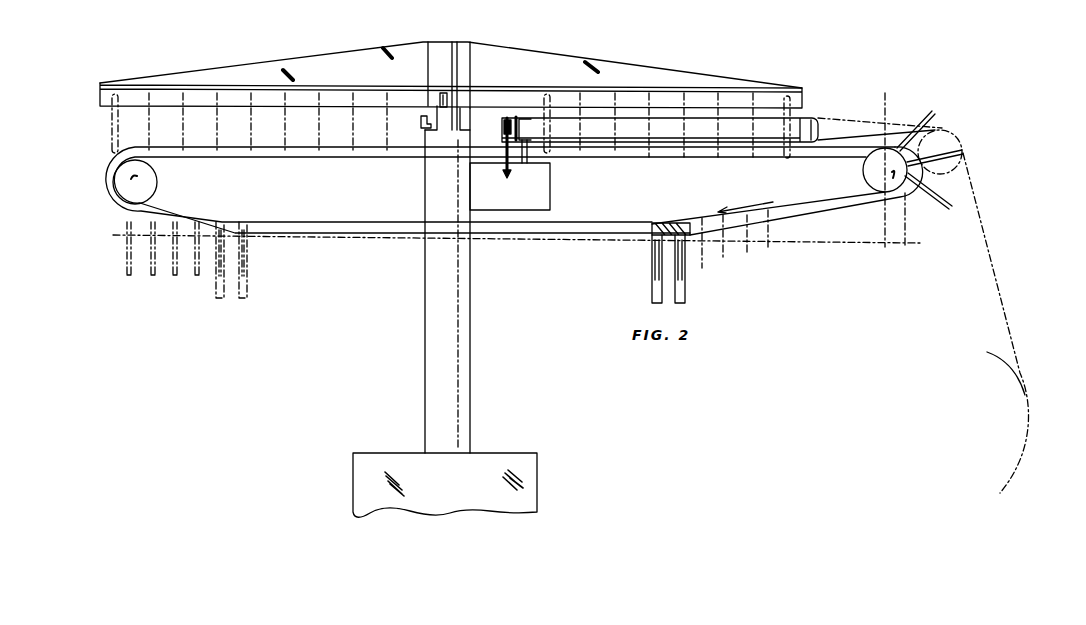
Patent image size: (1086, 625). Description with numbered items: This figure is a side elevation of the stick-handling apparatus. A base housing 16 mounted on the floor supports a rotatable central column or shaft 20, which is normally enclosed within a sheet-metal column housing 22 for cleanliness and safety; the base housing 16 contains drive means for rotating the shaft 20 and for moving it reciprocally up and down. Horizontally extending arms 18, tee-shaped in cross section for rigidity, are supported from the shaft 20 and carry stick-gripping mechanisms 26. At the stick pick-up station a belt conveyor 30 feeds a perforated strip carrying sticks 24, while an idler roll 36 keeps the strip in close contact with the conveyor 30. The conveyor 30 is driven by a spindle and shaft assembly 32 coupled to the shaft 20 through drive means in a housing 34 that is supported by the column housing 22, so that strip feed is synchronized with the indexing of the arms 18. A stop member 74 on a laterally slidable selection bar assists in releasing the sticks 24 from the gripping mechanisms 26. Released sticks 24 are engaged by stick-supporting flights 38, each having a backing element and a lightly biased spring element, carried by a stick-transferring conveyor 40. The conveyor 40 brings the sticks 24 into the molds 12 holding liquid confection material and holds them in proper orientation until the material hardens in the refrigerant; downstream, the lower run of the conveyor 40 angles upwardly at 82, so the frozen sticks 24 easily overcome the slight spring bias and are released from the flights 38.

The mold 12 is at (249, 290).
The base housing 16 is at (489, 455).
The horizontally extending arm 18 is at (451, 86).
The rotatable central column or shaft 20 is at (458, 122).
The column housing enclosure 22 is at (470, 267).
The stick 24 is at (793, 105).
The stick-gripping mechanism 26 is at (434, 100).
The belt conveyor 30 is at (608, 134).
The spindle and shaft assembly 32 is at (529, 140).
The drive housing 34 is at (551, 181).
The idler roll 36 is at (505, 126).
The stick-supporting flight 38 is at (660, 223).
The stick-transferring conveyor 40 is at (866, 209).
The stop member 74 is at (421, 128).
The upwardly angled portion of the lower conveyor run 82 is at (188, 223).